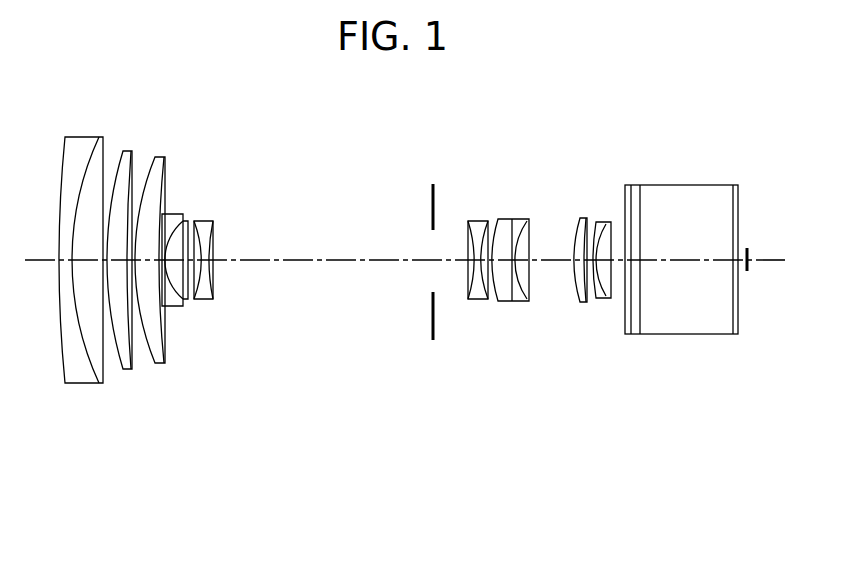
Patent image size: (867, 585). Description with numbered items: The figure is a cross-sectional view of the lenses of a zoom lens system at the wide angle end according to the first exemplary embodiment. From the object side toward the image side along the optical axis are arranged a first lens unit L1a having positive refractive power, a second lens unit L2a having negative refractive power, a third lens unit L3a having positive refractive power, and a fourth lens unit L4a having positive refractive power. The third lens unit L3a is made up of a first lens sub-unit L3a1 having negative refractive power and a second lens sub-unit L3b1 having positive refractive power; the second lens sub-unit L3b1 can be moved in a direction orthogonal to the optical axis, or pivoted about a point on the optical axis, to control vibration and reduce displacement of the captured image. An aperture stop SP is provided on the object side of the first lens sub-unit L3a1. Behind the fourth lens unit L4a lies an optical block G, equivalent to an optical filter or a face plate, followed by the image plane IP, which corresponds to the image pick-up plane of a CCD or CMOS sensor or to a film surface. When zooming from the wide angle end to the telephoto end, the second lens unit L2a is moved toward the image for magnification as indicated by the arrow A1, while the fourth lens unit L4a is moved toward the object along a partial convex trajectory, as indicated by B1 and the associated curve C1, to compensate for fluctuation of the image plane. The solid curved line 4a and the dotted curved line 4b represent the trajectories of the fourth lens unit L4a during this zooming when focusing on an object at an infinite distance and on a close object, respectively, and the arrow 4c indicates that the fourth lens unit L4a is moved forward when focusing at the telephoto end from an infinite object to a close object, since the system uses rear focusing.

The first lens unit L1a is at (170, 403).
The second lens unit L2a is at (222, 316).
The third lens unit L3a is at (495, 282).
The first lens sub-unit L3a1 is at (491, 204).
The second lens sub-unit L3b1 is at (520, 232).
The fourth lens unit L4a is at (619, 322).
The aperture stop SP is at (434, 184).
The optical block G is at (753, 173).
The image plane IP is at (749, 248).
The movement of second lens unit A1 is at (208, 375).
The movement of fourth lens unit B1 is at (595, 372).
The movement locus of lens subunit (solid) C1 is at (618, 372).
The solid curved line 4a is at (632, 510).
The dotted curved line 4b is at (539, 510).
The arrow 4c is at (613, 510).